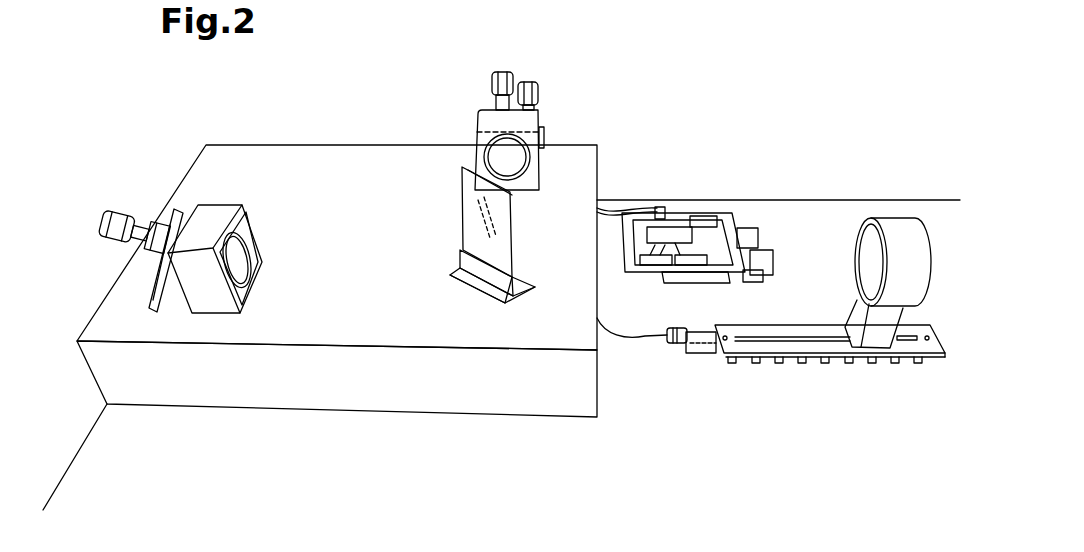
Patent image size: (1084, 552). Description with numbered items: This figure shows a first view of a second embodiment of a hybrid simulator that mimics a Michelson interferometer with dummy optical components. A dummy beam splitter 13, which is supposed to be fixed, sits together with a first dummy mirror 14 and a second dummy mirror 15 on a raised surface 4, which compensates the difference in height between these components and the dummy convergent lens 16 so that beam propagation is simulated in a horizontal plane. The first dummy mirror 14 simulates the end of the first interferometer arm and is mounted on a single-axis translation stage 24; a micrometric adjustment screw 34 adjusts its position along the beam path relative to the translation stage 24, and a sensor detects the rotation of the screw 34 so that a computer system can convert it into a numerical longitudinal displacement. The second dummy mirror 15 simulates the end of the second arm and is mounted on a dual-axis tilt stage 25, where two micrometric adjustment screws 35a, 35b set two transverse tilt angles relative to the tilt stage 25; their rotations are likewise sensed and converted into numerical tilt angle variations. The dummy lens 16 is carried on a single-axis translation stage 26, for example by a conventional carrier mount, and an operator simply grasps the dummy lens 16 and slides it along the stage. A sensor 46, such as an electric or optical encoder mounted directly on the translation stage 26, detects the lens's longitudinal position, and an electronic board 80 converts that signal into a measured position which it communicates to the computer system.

The surface 4 is at (436, 313).
The dummy beam splitter 13 is at (472, 232).
The first dummy mirror 14 is at (238, 252).
The second dummy mirror 15 is at (480, 138).
The dummy convergent lens 16 is at (870, 246).
The single-axis translation stage 24 is at (160, 300).
The dual-axis tilt stage 25 is at (542, 168).
The single-axis translation stage 26 is at (790, 348).
The micrometric adjustment screw 34 is at (127, 220).
The micrometric adjustment screw 35a is at (492, 80).
The micrometric adjustment screw 35b is at (540, 95).
The sensor 46 is at (680, 345).
The electronic board 80 is at (700, 213).